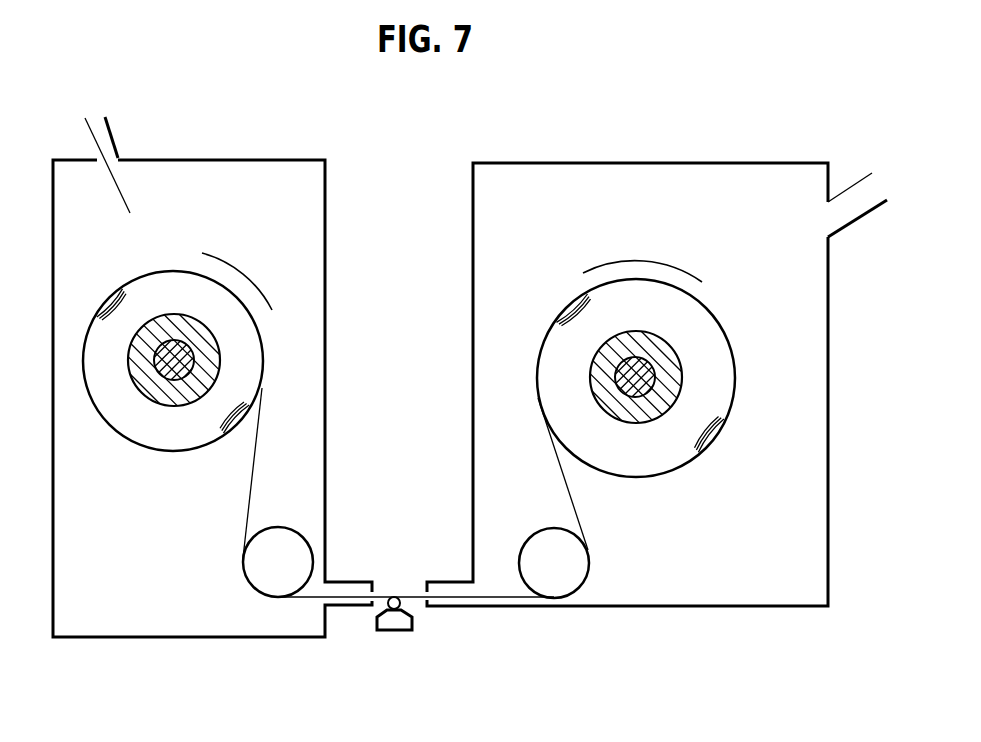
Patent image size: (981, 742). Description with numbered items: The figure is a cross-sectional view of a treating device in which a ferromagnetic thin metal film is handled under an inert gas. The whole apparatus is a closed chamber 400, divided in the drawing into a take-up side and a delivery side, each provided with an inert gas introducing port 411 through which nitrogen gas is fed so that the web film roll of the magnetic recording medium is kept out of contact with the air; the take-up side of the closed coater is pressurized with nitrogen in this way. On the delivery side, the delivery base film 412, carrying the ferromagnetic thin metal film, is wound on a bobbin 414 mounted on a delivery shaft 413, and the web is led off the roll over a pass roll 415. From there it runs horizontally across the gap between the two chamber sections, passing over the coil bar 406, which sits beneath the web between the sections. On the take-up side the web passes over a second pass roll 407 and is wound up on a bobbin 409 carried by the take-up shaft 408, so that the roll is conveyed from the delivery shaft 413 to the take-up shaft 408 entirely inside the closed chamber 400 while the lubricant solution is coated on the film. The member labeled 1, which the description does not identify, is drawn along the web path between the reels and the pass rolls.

The closed chamber 400 is at (711, 101).
The magnetic tape 1 is at (253, 490).
The coil bar 406 is at (403, 622).
The pass roll 407 is at (258, 555).
The take-up shaft 408 is at (170, 332).
The bobbin 409 is at (175, 402).
The inert gas introducing port 411 is at (111, 133).
The delivery base film 412 is at (708, 316).
The delivery shaft 413 is at (653, 377).
The bobbin 414 is at (707, 450).
The pass roll 415 is at (572, 570).